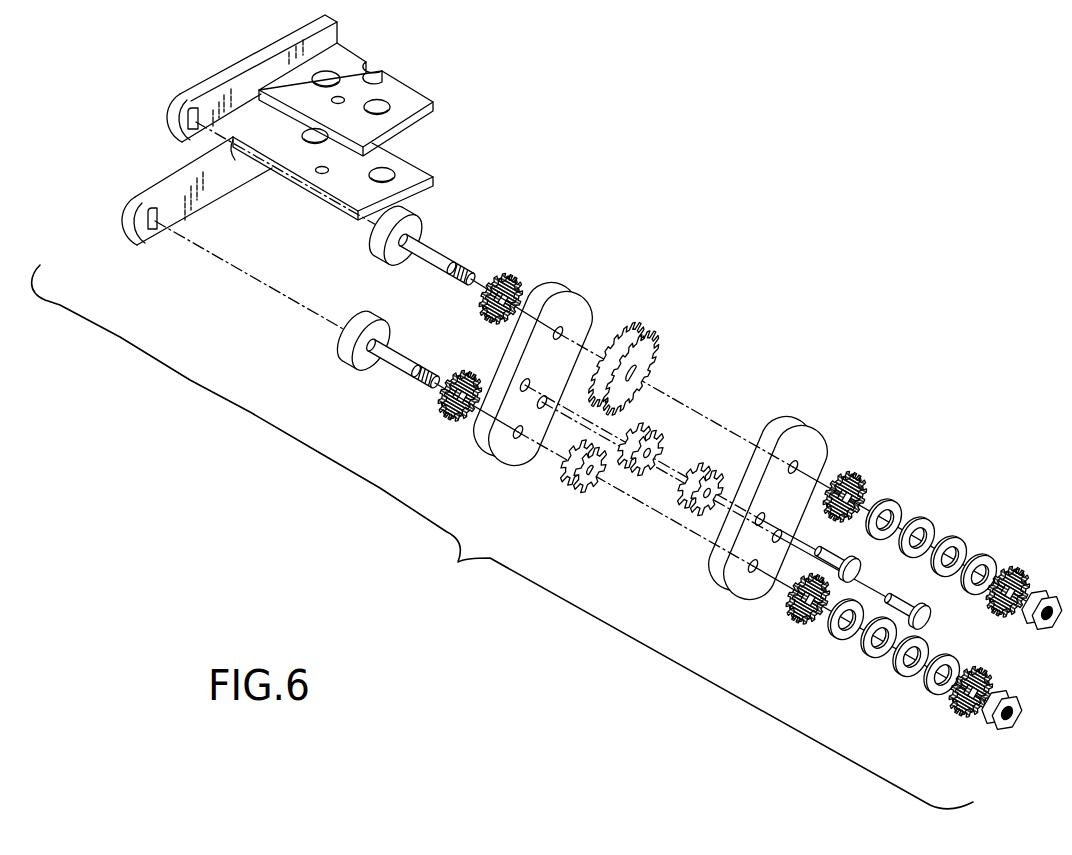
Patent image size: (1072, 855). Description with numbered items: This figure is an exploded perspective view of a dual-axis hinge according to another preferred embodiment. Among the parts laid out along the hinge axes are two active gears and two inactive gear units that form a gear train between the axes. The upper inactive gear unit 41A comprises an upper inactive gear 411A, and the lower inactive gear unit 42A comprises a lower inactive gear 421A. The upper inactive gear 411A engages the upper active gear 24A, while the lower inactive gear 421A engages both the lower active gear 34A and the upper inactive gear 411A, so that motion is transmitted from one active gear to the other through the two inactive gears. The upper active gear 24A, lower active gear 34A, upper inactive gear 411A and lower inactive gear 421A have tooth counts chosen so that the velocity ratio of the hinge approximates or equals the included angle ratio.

The upper active gear 24A is at (643, 355).
The lower active gear 34A is at (574, 482).
The upper inactive gear unit 41A is at (675, 418).
The upper inactive gear 411A is at (645, 475).
The lower inactive gear unit 42A is at (701, 529).
The lower inactive gear 421A is at (712, 475).